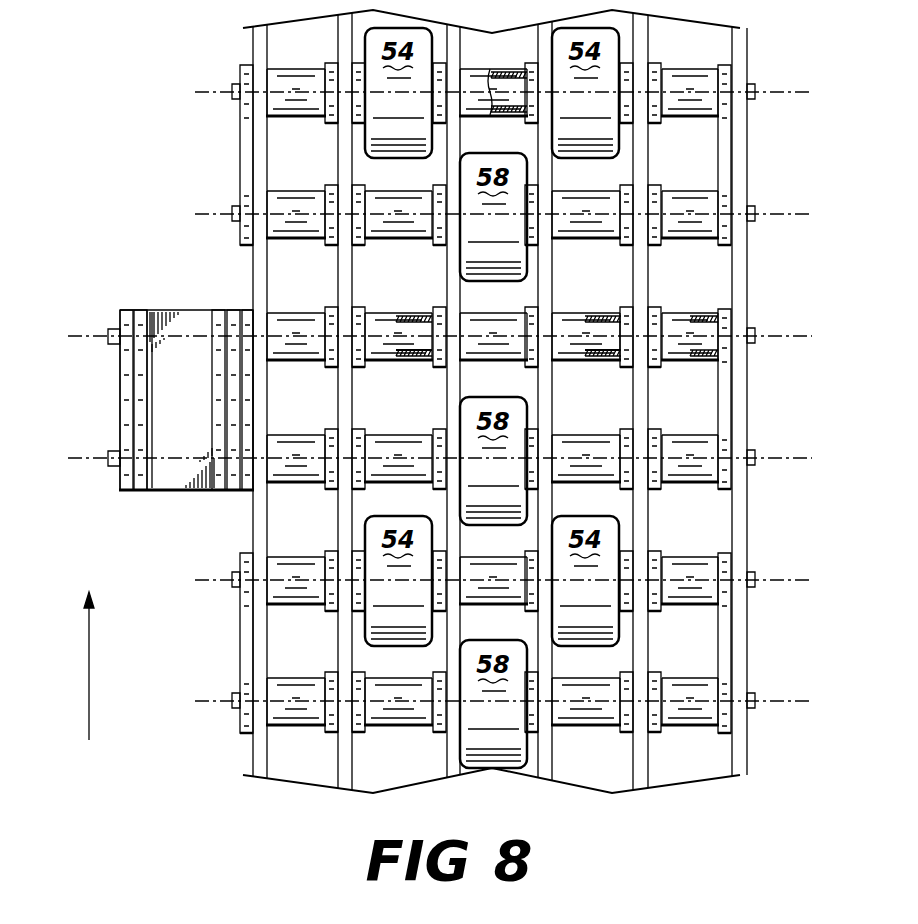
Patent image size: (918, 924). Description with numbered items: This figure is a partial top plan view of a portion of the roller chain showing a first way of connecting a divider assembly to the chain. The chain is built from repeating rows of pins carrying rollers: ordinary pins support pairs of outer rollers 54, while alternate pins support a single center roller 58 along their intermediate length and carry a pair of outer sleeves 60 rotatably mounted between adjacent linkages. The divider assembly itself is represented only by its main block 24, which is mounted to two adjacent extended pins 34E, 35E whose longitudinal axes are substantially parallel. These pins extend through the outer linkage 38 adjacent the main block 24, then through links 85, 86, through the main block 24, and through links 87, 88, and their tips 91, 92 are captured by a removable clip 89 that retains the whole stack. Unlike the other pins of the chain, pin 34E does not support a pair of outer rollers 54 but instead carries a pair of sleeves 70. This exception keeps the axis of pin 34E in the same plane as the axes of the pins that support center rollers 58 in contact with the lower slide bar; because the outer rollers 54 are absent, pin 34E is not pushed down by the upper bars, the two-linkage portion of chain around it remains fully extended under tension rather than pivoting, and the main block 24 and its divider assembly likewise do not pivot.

The main block 24 is at (144, 420).
The pin 34E is at (405, 318).
The pin 35E is at (703, 350).
The outer linkage 38 is at (247, 490).
The outer roller 54 is at (492, 337).
The center roller 58 is at (493, 460).
The outer sleeve 60 is at (705, 318).
The sleeve 70 is at (384, 354).
The link 85 is at (233, 490).
The link 86 is at (220, 490).
The link 87 is at (112, 440).
The link 88 is at (128, 402).
The removable clip 89 is at (120, 376).
The tip 91 is at (108, 333).
The tip 92 is at (108, 466).